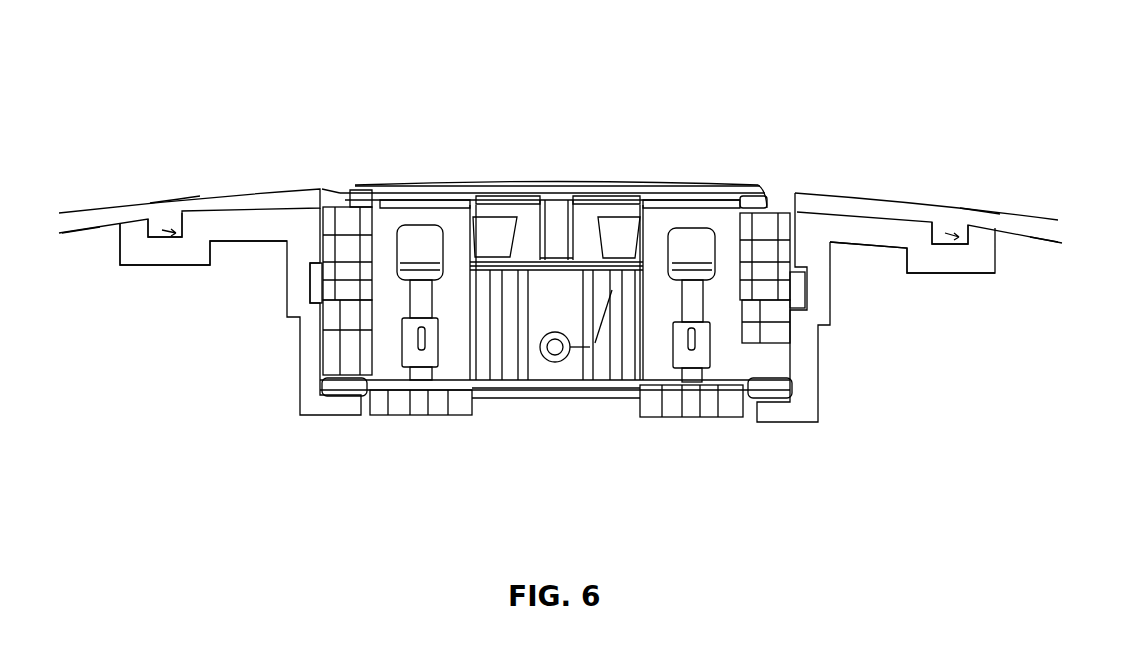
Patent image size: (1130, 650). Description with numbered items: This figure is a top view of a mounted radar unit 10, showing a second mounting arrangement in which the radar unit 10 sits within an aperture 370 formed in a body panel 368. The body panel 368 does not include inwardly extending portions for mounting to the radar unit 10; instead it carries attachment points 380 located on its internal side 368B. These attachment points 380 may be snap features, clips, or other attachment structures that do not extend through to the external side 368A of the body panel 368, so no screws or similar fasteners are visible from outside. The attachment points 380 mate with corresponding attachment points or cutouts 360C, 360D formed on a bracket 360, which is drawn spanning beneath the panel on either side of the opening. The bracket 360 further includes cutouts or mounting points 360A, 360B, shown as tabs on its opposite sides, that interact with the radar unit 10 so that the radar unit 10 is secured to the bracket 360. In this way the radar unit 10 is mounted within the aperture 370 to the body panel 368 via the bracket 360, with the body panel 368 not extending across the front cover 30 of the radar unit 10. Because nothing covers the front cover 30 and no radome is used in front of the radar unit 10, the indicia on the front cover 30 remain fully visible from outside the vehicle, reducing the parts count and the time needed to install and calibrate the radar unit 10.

The radar unit 10 is at (672, 150).
The front cover 30 is at (450, 180).
The bracket 360 is at (263, 223).
The cutout or mounting point 360A is at (807, 292).
The cutout or mounting point 360B is at (310, 280).
The attachment point or cutout 360C is at (953, 240).
The attachment point or cutout 360D is at (152, 238).
The body panel 368 is at (97, 210).
The external side 368A is at (200, 195).
The internal side 368B is at (74, 235).
The aperture 370 is at (325, 195).
The attachment points 380 is at (182, 240).